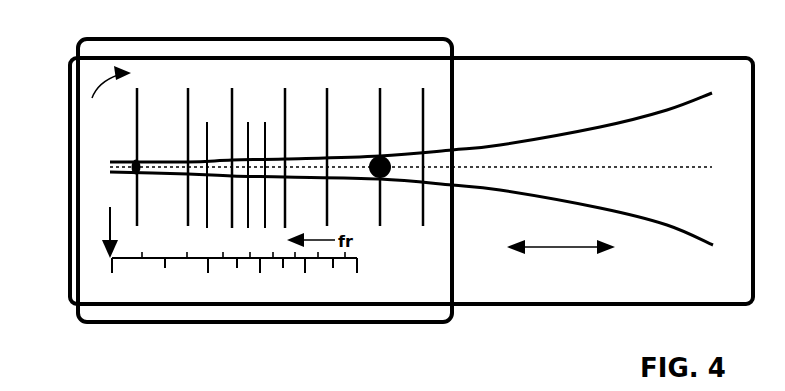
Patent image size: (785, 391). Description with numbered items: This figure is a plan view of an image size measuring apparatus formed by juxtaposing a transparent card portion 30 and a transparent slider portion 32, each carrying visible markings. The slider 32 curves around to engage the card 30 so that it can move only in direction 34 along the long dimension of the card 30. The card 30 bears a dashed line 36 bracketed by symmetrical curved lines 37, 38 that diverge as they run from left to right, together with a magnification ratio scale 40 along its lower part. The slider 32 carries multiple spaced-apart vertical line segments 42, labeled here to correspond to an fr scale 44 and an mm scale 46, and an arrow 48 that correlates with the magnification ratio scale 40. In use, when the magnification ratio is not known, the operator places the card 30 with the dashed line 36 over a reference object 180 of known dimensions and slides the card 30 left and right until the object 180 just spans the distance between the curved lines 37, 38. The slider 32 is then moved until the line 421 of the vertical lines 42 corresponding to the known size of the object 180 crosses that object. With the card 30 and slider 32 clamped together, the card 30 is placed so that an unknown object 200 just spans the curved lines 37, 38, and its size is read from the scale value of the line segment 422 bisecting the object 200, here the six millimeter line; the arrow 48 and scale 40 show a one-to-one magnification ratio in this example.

The first portion 30 is at (594, 105).
The second portion 32 is at (223, 39).
The direction 34 is at (561, 269).
The dashed line 36 is at (658, 168).
The curved line 37 is at (682, 108).
The curved line 38 is at (693, 237).
The magnification ratio scale 40 is at (372, 277).
The vertical line segments 42 is at (435, 123).
The fr scale 44 is at (375, 240).
The mm scale 46 is at (440, 77).
The arrow 48 is at (110, 212).
The object 180 is at (143, 173).
The object 200 is at (372, 158).
The line 421 is at (137, 135).
The line segment 422 is at (381, 105).